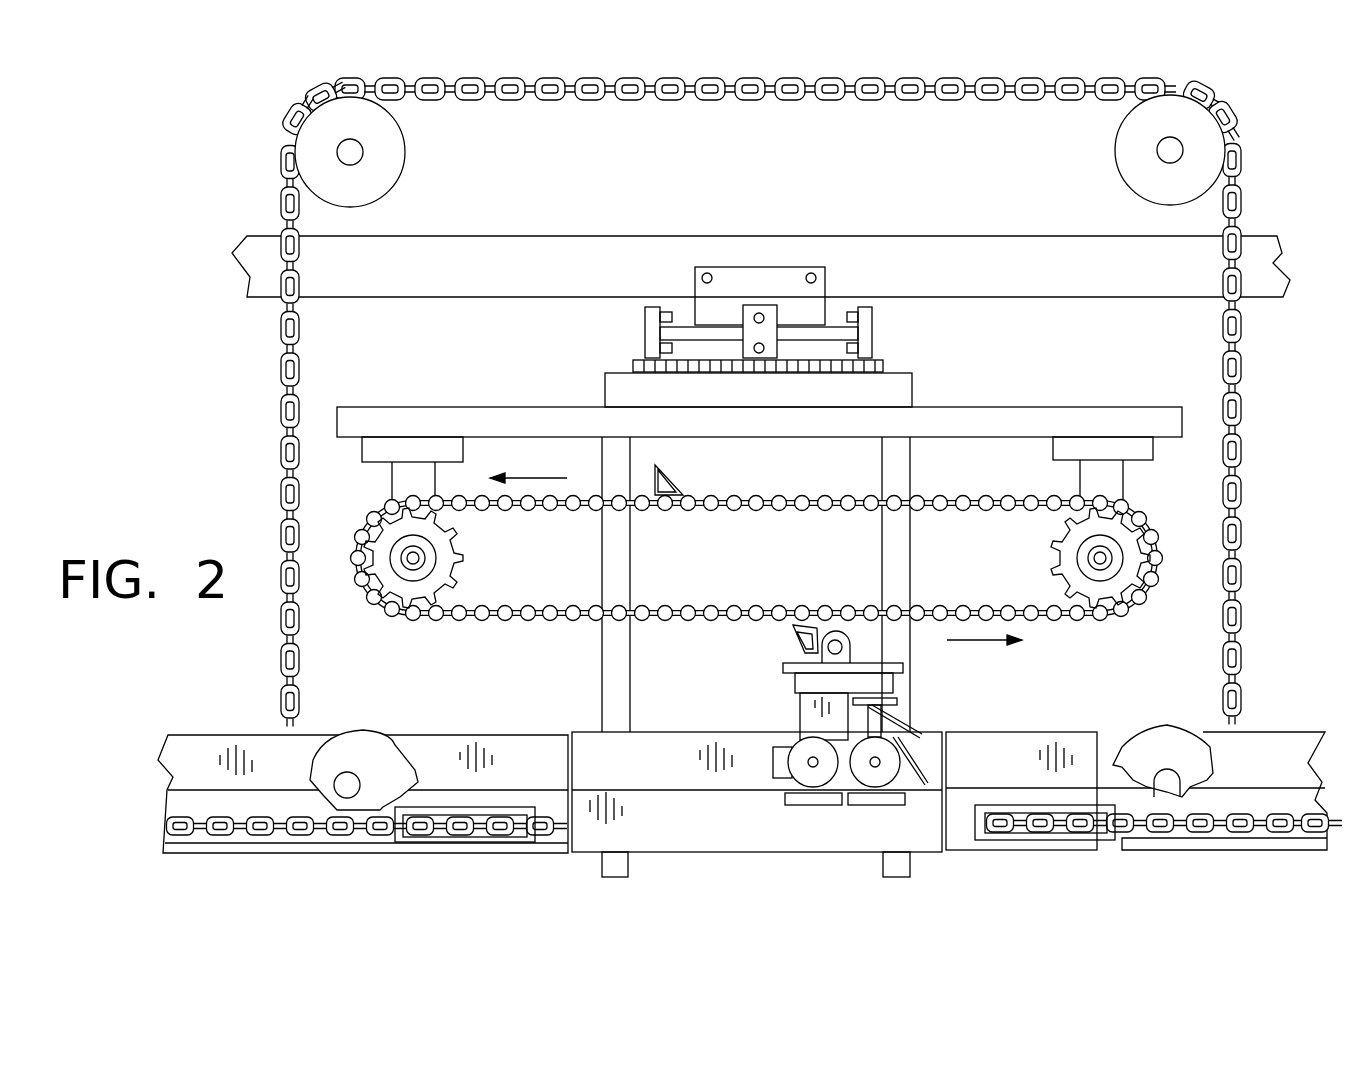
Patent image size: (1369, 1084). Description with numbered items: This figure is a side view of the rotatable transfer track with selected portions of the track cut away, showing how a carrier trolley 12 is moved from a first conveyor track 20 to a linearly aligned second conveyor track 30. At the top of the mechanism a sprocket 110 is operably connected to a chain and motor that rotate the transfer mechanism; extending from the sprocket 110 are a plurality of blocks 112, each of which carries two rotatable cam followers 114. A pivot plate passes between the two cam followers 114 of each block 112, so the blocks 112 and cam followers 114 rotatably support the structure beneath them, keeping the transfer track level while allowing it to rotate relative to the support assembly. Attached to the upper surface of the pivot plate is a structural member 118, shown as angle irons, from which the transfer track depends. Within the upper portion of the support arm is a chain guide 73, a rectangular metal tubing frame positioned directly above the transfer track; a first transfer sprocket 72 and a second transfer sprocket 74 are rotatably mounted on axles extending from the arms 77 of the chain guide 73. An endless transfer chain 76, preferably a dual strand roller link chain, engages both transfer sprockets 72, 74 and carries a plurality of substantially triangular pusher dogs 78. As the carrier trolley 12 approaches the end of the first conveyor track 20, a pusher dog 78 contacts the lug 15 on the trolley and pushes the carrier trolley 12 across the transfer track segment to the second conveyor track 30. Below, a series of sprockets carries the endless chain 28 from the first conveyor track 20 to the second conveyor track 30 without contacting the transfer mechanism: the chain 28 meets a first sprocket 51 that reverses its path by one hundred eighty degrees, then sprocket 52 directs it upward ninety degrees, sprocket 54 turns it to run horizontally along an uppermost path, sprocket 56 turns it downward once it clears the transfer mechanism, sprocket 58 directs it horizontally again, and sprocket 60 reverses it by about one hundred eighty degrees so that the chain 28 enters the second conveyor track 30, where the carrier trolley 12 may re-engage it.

The carrier trolley 12 is at (807, 720).
The lug 15 is at (850, 650).
The first conveyor track 20 is at (190, 747).
The endless chain 28 is at (280, 433).
The second conveyor track 30 is at (1275, 752).
The first sprocket 51 is at (452, 837).
The sprocket 52 is at (365, 747).
The sprocket 54 is at (393, 163).
The sprocket 56 is at (1118, 148).
The sprocket 58 is at (1150, 740).
The sprocket 60 is at (1058, 833).
The first transfer sprocket 72 is at (450, 565).
The chain guide 73 is at (425, 410).
The second transfer sprocket 74 is at (1063, 572).
The endless transfer chain 76 is at (792, 507).
The arms 77 is at (402, 470).
The pusher dog 78 is at (670, 480).
The sprocket 110 is at (885, 367).
The blocks 112 is at (653, 308).
The cam followers 114 is at (664, 313).
The structural member 118 is at (722, 278).